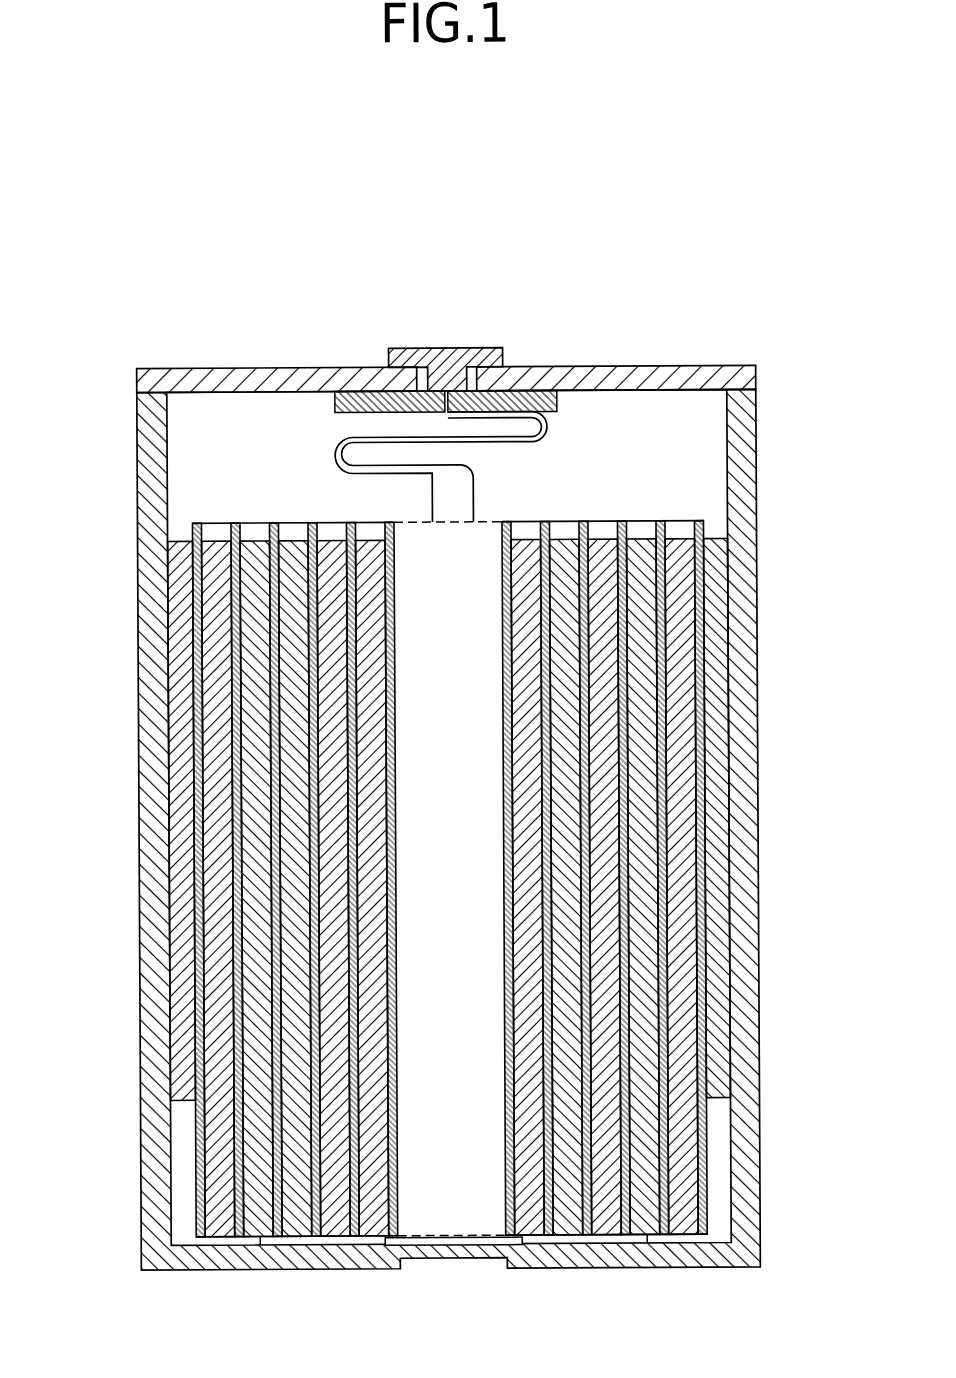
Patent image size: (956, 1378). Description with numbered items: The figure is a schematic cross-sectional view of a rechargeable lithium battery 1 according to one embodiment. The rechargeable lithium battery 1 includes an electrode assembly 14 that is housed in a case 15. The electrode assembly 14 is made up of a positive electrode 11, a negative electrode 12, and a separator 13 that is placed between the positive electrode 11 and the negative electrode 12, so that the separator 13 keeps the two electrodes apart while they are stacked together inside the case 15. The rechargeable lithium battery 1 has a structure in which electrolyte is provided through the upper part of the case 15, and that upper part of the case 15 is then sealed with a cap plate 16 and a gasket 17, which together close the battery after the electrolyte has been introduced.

The rechargeable lithium battery 1 is at (469, 244).
The positive electrode 11 is at (686, 1143).
The negative electrode 12 is at (261, 1181).
The separator 13 is at (236, 1130).
The electrode assembly 14 is at (633, 497).
The case 15 is at (150, 452).
The cap plate 16 is at (256, 376).
The gasket 17 is at (395, 347).